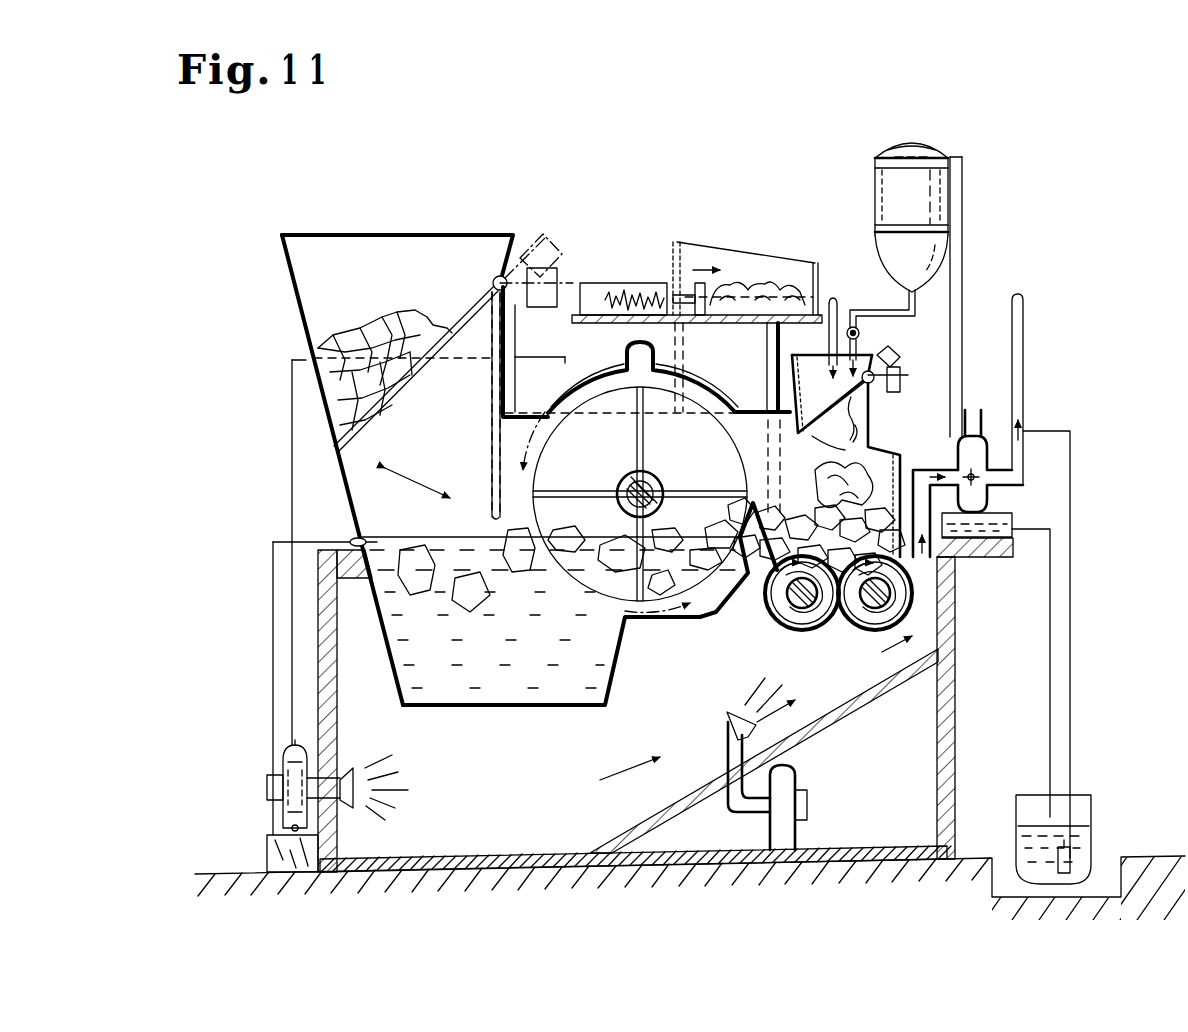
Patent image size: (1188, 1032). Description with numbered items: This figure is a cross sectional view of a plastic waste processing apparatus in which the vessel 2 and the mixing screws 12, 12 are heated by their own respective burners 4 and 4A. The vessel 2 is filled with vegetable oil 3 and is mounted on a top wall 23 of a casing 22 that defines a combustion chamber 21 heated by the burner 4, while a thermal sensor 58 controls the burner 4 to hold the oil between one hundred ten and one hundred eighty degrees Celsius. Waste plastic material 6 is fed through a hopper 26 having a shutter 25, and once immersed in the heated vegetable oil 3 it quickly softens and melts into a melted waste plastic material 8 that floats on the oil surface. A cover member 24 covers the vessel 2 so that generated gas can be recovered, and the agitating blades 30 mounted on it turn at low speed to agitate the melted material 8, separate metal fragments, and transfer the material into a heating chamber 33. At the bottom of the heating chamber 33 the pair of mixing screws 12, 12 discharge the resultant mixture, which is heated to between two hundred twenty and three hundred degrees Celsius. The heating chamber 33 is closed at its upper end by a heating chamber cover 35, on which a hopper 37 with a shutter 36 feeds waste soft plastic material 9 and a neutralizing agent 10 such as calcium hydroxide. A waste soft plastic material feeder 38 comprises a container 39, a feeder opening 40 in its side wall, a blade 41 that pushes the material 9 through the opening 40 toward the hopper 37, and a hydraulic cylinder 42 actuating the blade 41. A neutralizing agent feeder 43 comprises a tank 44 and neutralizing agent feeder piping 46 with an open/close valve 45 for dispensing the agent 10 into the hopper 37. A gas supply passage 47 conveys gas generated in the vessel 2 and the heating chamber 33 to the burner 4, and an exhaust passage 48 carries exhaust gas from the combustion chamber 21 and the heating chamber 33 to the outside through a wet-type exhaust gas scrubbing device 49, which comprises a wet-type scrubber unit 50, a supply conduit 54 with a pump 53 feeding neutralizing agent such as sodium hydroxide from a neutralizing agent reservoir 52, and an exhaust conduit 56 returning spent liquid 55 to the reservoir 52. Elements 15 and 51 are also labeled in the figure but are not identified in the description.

The vessel 2 is at (515, 708).
The vegetable oil 3 is at (468, 537).
The burner 4 is at (265, 775).
The burner 4A is at (802, 777).
The waste plastic material 6 is at (360, 340).
The melted waste plastic material 8 is at (520, 535).
The waste soft plastic material 9 is at (757, 280).
The neutralizing agent 10 is at (834, 423).
The mixing screws 12 is at (788, 628).
The floating matter 15 is at (522, 578).
The combustion chamber 21 is at (352, 628).
The casing 22 is at (318, 685).
The top wall 23 is at (330, 545).
The cover member 24 is at (557, 407).
The shutter 25 is at (405, 382).
The hopper 26 is at (374, 248).
The agitating blades 30 is at (637, 438).
The heating chamber 33 is at (900, 470).
The heating chamber cover 35 is at (772, 400).
The shutter 36 is at (833, 394).
The hopper 37 is at (813, 357).
The waste soft plastic material feeder 38 is at (643, 265).
The waste soft plastic material container 39 is at (675, 255).
The feeder opening 40 is at (832, 297).
The blade 41 is at (700, 280).
The hydraulic cylinder 42 is at (600, 283).
The neutralizing agent feeder 43 is at (940, 145).
The tank 44 is at (893, 152).
The open/close valve 45 is at (862, 333).
The neutralizing agent feeder piping 46 is at (886, 311).
The gas supply passage 47 is at (290, 424).
The exhaust passage 48 is at (1027, 345).
The wet-type exhaust gas scrubbing device 49 is at (992, 492).
The wet-type scrubber unit 50 is at (978, 425).
The liquid 51 is at (1022, 828).
The neutralizing agent reservoir 52 is at (1093, 800).
The pump 53 is at (1072, 852).
The supply conduit 54 is at (1073, 654).
The spent liquid 55 is at (1013, 522).
The exhaust conduit 56 is at (1048, 654).
The thermal sensor 58 is at (352, 538).